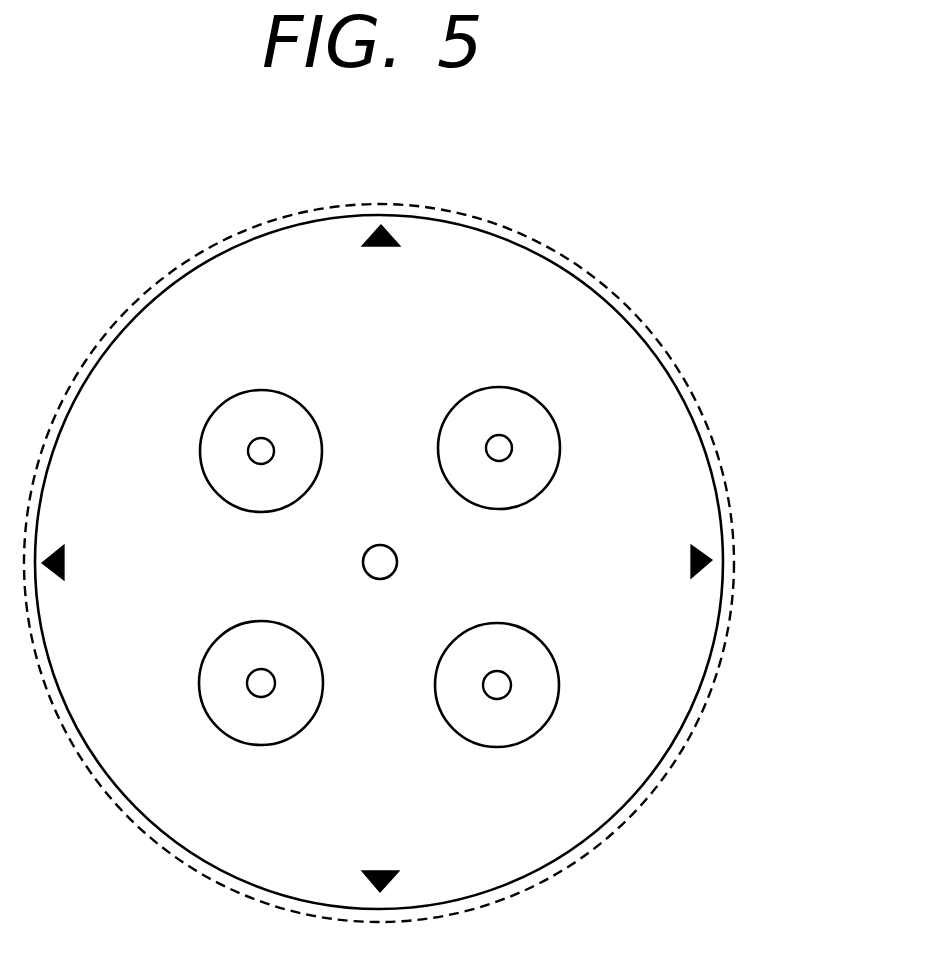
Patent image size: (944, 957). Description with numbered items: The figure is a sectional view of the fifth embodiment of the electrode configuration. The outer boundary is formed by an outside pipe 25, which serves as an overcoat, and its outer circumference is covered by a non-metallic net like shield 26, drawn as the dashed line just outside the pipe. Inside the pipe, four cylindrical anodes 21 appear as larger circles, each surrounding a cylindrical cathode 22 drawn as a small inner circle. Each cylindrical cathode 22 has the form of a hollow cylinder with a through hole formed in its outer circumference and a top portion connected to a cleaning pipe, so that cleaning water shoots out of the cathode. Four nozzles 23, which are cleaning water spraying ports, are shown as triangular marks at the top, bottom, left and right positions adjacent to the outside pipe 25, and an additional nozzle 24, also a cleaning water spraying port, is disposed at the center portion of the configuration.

The cylindrical anode 21 is at (498, 387).
The cylindrical cathode 22 is at (508, 437).
The nozzle 23 is at (690, 558).
The nozzle disposed at a center portion 24 is at (398, 562).
The outside pipe 25 is at (556, 265).
The non-metallic net like shield 26 is at (692, 730).